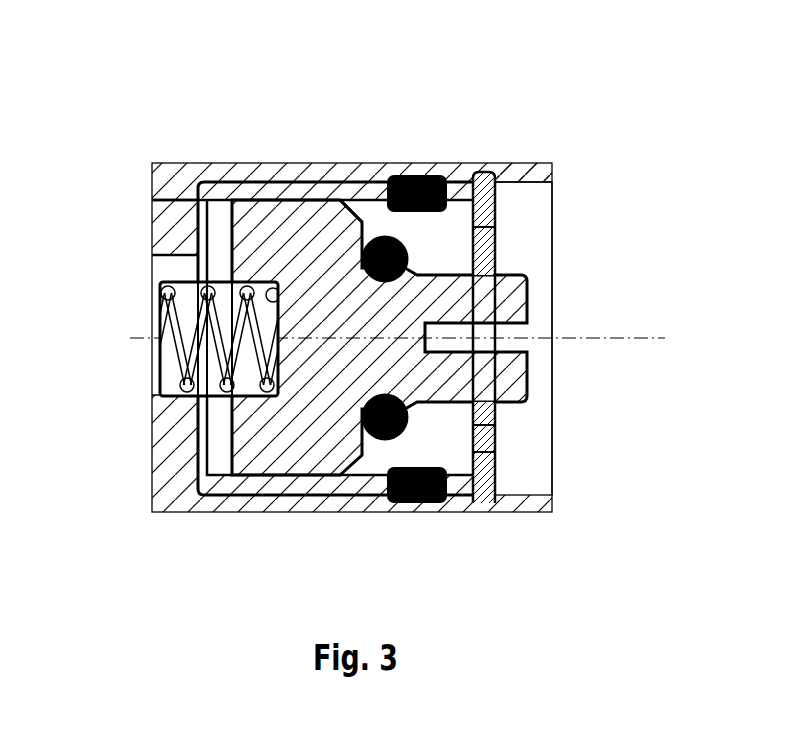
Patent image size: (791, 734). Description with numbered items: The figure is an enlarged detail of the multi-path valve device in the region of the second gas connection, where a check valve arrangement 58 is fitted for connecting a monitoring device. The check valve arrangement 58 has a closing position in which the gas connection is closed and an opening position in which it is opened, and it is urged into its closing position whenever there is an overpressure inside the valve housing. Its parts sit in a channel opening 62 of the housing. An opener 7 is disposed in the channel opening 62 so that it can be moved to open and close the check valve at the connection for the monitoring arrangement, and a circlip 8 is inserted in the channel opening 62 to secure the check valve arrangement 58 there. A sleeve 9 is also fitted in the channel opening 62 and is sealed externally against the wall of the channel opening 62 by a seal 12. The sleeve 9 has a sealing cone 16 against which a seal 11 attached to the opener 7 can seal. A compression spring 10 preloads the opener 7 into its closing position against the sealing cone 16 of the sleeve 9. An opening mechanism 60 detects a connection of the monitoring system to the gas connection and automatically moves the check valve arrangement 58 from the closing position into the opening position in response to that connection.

The check valve arrangement 58 is at (270, 529).
The opener 7 is at (283, 250).
The compression spring 10 is at (200, 270).
The seal 11 is at (366, 228).
The sealing cone 16 is at (375, 214).
The seal 12 is at (415, 178).
The sleeve 9 is at (513, 165).
The channel opening 62 is at (535, 182).
The opening mechanism 60 is at (543, 284).
The circlip 8 is at (487, 473).